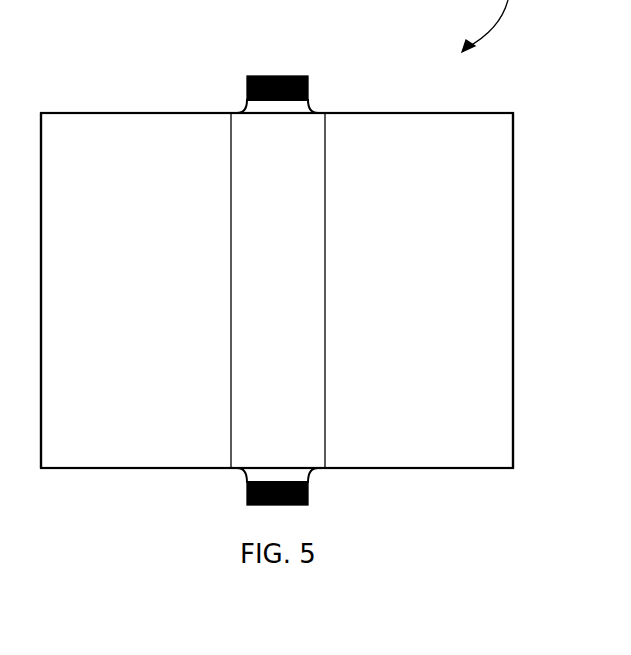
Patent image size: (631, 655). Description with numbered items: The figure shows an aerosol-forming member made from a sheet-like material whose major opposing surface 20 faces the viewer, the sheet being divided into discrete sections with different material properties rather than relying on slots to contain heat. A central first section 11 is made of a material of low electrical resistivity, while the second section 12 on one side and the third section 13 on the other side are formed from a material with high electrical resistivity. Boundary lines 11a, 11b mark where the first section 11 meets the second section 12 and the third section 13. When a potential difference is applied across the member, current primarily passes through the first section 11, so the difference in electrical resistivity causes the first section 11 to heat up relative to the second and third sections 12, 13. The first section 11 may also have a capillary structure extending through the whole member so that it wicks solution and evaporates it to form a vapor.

The first section 11 is at (272, 375).
The first boundary line 11a is at (231, 126).
The second boundary line 11b is at (335, 127).
The second section 12 is at (133, 225).
The third section 13 is at (417, 256).
The major opposing surface 20 is at (387, 180).